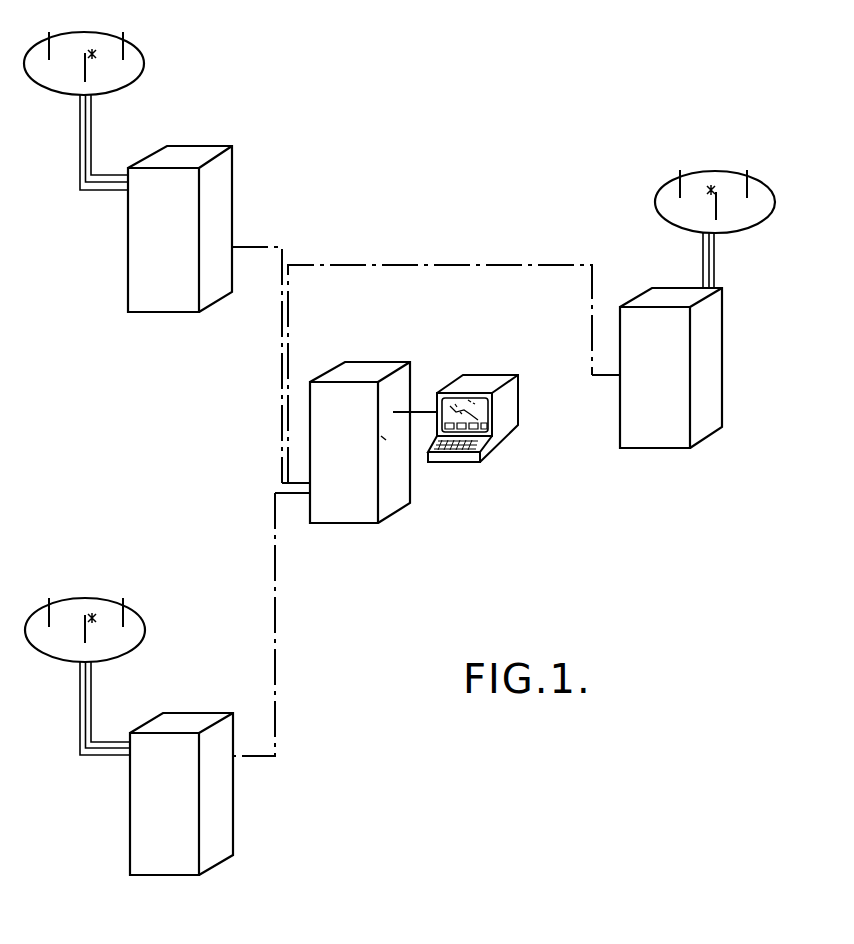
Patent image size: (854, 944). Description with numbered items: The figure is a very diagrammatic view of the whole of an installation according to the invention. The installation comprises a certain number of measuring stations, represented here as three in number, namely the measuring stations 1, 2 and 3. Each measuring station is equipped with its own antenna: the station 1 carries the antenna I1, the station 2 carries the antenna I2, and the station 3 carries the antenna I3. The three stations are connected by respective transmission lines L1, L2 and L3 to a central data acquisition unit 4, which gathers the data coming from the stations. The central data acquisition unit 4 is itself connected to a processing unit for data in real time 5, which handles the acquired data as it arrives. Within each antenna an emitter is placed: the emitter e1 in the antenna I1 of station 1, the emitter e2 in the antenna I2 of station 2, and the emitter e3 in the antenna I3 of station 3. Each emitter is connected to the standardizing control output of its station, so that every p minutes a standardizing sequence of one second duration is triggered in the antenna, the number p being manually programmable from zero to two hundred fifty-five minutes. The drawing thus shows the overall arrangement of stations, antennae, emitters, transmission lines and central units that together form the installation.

The measuring station 1 is at (219, 180).
The measuring station 2 is at (652, 435).
The measuring station 3 is at (227, 822).
The central data acquisition unit 4 is at (356, 462).
The processing unit for data in real time 5 is at (497, 437).
The antenna I1 is at (140, 66).
The antenna I2 is at (665, 198).
The antenna I3 is at (71, 607).
The emitter e1 is at (93, 52).
The emitter e2 is at (712, 191).
The emitter e3 is at (94, 616).
The transmission line L1 is at (273, 243).
The transmission line L2 is at (433, 263).
The transmission line L3 is at (275, 618).